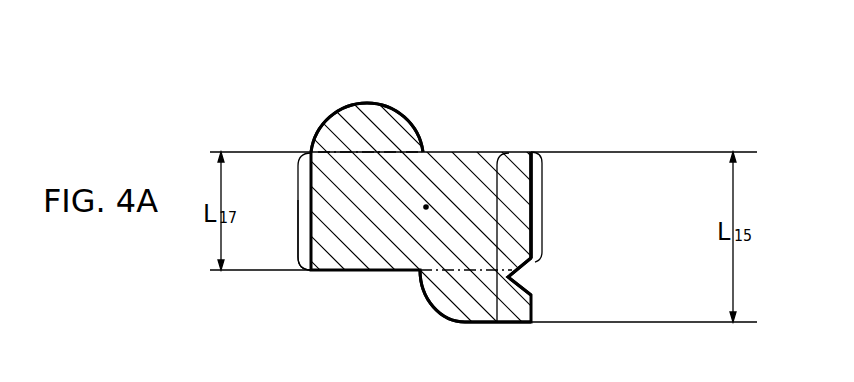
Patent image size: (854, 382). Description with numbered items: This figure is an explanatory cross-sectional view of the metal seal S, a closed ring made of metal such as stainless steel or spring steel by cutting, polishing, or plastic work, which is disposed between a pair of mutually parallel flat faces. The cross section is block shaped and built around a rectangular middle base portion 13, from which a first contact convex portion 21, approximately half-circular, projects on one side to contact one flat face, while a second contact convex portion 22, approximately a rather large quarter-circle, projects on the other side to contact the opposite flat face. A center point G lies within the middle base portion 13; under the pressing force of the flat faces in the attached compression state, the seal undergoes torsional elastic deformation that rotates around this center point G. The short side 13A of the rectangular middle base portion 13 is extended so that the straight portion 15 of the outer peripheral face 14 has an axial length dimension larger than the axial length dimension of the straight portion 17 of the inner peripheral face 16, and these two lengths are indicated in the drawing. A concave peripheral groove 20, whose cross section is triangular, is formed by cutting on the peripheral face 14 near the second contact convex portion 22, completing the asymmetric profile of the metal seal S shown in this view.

The metal seal S is at (548, 142).
The rectangular middle base portion 13 is at (513, 190).
The short side of the rectangular middle base portion 13A is at (541, 153).
The peripheral face 14 is at (534, 173).
The straight portion 15 is at (497, 225).
The inner peripheral face 16 is at (308, 232).
The straight portion 17 is at (297, 158).
The concave peripheral groove 20 is at (521, 280).
The first contact convex portion 21 is at (355, 112).
The second contact convex portion 22 is at (479, 305).
The center point G is at (413, 206).